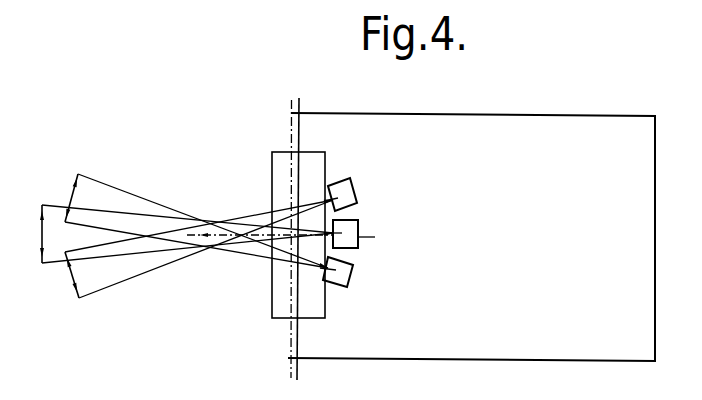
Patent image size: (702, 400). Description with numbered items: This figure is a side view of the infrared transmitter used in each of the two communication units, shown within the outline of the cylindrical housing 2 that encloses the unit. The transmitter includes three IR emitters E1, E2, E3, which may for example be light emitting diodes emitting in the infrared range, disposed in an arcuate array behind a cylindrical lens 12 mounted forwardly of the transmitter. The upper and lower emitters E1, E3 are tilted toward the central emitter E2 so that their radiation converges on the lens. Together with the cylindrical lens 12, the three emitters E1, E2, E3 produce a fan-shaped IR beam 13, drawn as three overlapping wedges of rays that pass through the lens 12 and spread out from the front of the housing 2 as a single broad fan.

The cylindrical housing 2 is at (572, 113).
The cylindrical lens 12 is at (272, 167).
The fan-shaped IR beam 13 is at (164, 176).
The IR emitter E1 is at (353, 183).
The IR emitter E2 is at (358, 223).
The IR emitter E3 is at (355, 270).